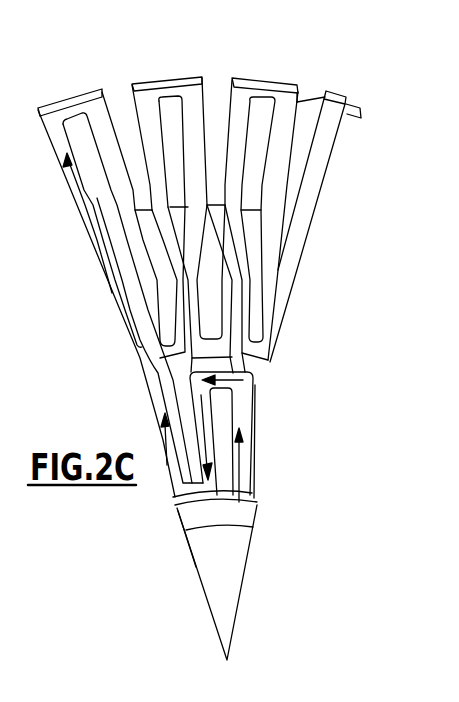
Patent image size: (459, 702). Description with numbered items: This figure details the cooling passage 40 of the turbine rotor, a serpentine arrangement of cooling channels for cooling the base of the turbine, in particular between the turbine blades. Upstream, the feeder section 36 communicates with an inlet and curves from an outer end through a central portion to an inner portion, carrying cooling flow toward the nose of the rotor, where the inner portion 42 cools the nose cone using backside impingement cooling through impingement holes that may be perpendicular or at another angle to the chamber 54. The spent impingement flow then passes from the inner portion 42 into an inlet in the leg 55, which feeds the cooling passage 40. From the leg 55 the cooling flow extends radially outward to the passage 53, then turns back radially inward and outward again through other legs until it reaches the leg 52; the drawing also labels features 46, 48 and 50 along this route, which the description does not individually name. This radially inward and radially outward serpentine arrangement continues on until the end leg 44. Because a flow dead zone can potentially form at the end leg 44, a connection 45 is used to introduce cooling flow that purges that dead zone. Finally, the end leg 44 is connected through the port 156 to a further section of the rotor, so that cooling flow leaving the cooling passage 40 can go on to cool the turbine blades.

The cooling passage 40 is at (212, 56).
The inner portion 42 is at (233, 540).
The end leg 44 is at (330, 118).
The connection 45 is at (310, 100).
The fin base 46 is at (255, 356).
The fin side wall 48 is at (282, 123).
The fin 50 is at (268, 80).
The leg 52 is at (72, 190).
The passage 53 is at (242, 383).
The chamber 54 is at (198, 567).
The leg 55 is at (237, 480).
The feeder section 36 is at (217, 225).
The port 156 is at (353, 107).